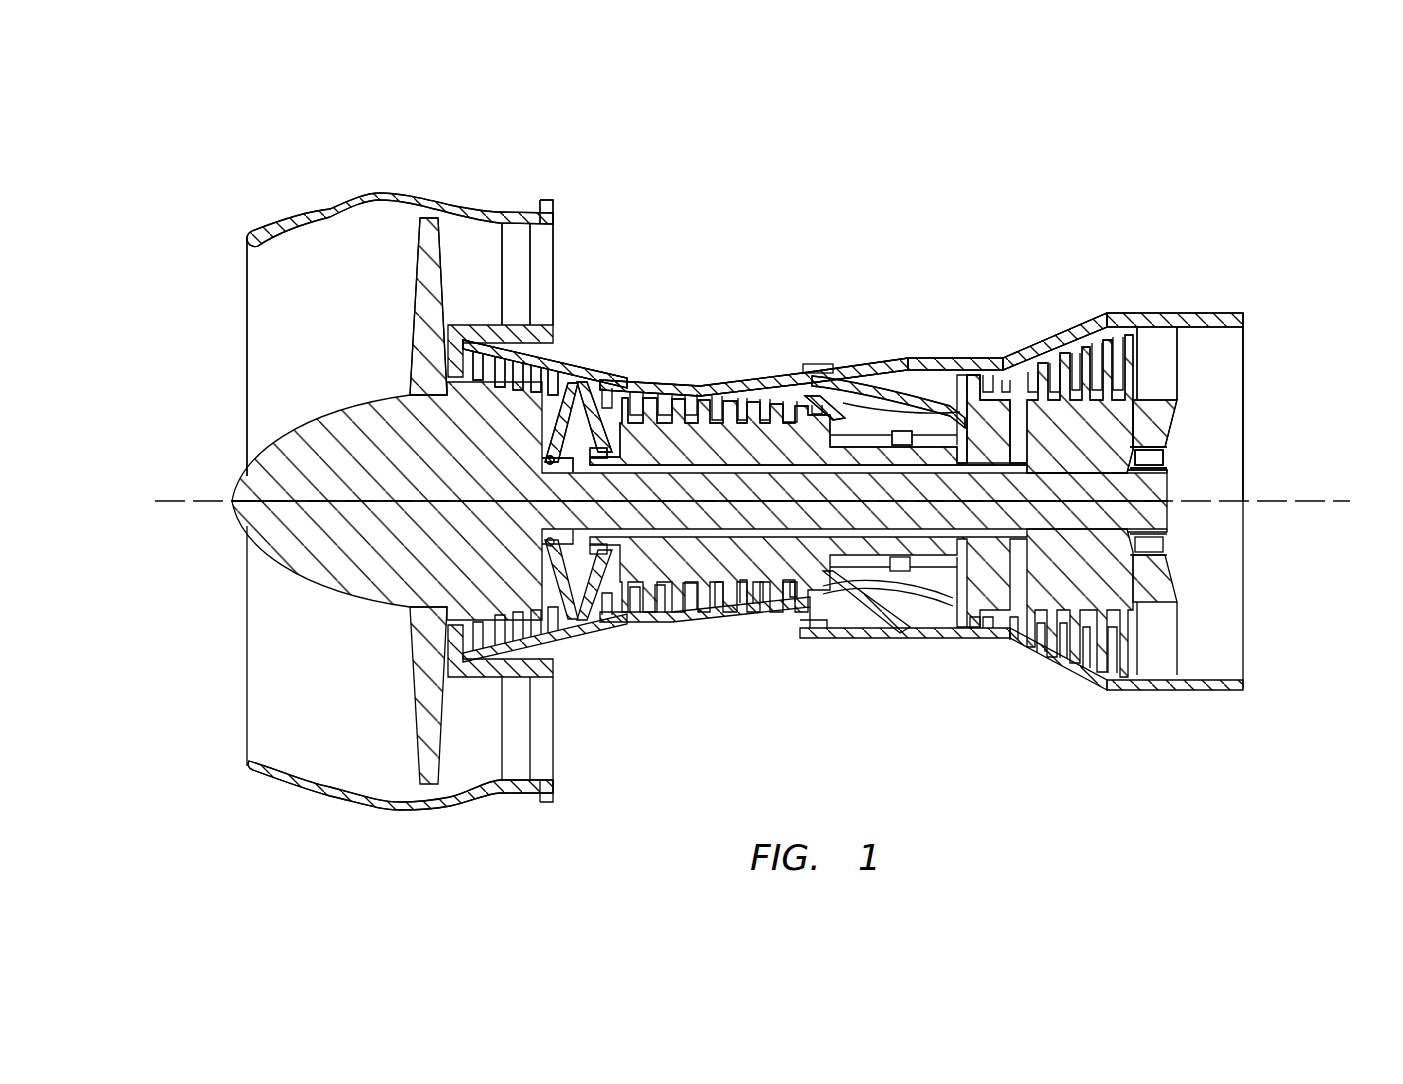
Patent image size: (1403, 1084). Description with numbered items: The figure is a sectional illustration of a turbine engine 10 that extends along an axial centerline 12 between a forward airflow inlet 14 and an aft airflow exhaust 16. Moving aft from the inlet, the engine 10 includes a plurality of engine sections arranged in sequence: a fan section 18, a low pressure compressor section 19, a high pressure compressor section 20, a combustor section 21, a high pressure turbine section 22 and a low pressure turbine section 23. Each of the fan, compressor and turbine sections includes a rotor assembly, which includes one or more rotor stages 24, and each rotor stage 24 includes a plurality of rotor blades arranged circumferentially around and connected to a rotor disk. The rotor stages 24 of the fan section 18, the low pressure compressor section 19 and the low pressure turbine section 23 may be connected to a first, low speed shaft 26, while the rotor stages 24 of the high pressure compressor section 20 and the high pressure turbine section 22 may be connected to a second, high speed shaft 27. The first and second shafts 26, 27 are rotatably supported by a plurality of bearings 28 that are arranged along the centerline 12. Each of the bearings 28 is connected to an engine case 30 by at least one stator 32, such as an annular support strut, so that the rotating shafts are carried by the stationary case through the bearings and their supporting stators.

The turbine engine 10 is at (224, 175).
The axial centerline 12 is at (1318, 503).
The forward airflow inlet 14 is at (247, 707).
The aft airflow exhaust 16 is at (1243, 651).
The fan section 18 is at (430, 219).
The low pressure compressor section 19 is at (507, 362).
The high pressure compressor section 20 is at (677, 390).
The combustor section 21 is at (895, 376).
The high pressure turbine section 22 is at (970, 380).
The low pressure turbine section 23 is at (1061, 360).
The rotor stage 24 is at (393, 662).
The first shaft 26 is at (820, 545).
The second shaft 27 is at (855, 562).
The bearing 28 is at (585, 580).
The engine case 30 is at (1166, 313).
The stator 32 is at (595, 428).